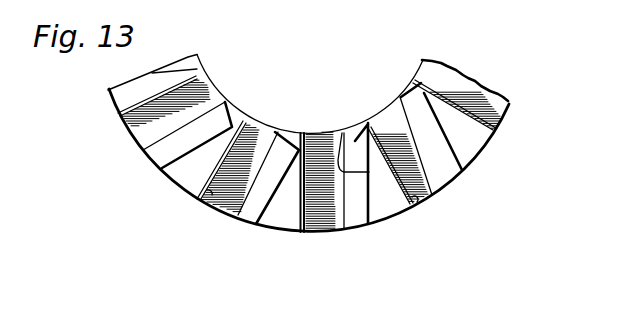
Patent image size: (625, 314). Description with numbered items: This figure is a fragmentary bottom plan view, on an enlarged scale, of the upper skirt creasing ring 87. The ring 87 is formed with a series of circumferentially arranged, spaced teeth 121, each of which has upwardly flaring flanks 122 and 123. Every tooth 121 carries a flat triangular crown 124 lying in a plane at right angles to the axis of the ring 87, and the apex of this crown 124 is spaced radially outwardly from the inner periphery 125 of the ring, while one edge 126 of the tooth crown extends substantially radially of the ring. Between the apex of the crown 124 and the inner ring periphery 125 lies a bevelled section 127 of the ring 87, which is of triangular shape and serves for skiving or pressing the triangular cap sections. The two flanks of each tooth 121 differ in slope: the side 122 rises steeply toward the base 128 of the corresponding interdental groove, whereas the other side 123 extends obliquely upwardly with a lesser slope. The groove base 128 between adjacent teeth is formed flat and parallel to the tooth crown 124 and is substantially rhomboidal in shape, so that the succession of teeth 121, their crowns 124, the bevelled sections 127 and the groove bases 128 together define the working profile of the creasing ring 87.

The upper skirt creasing ring 87 is at (493, 140).
The tooth 121 is at (177, 183).
The flank 122 is at (212, 198).
The flank 123 is at (162, 153).
The tooth crown 124 is at (215, 183).
The inner periphery 125 is at (213, 81).
The crown edge 126 is at (297, 217).
The bevelled section 127 is at (247, 117).
The groove base 128 is at (345, 230).